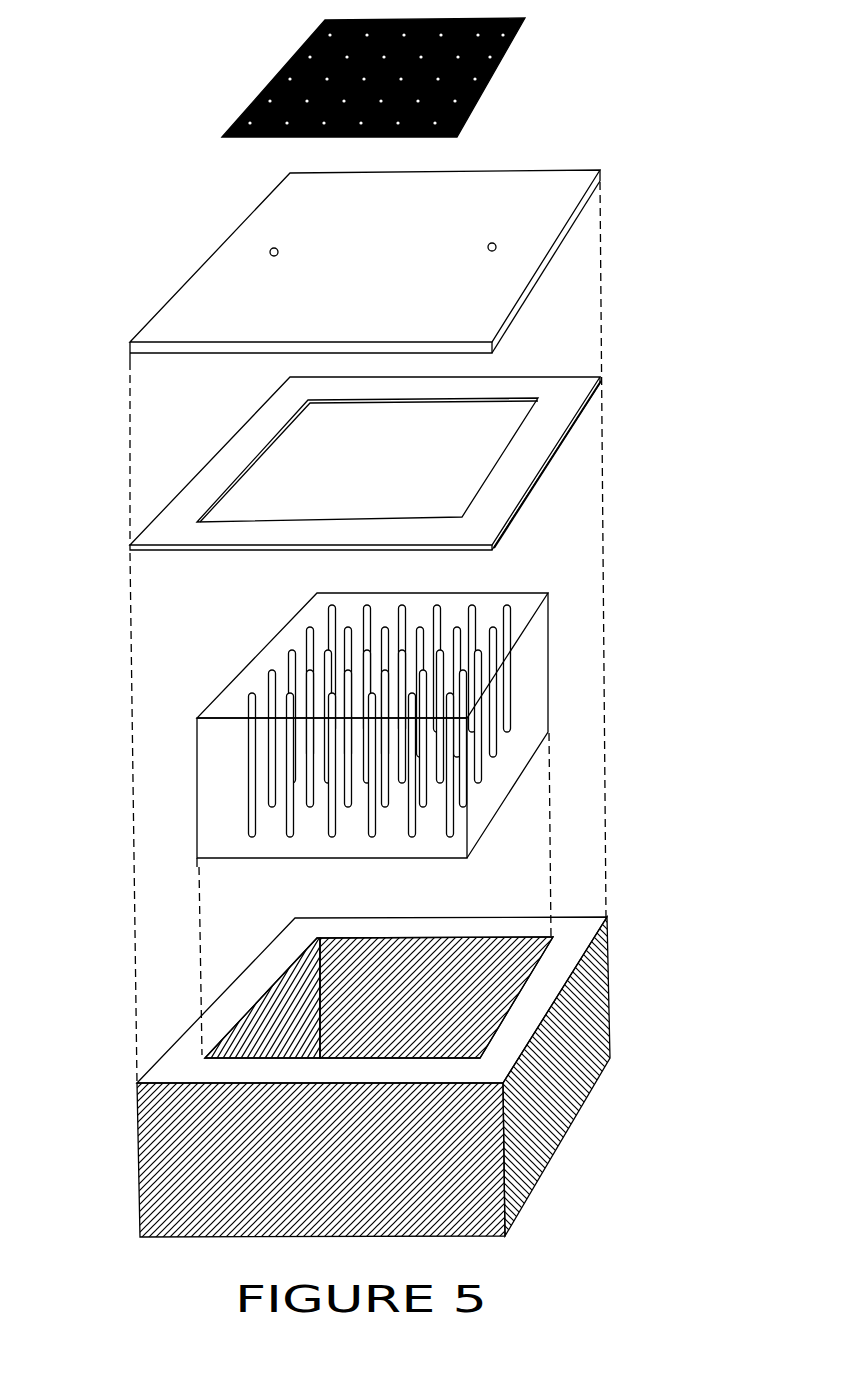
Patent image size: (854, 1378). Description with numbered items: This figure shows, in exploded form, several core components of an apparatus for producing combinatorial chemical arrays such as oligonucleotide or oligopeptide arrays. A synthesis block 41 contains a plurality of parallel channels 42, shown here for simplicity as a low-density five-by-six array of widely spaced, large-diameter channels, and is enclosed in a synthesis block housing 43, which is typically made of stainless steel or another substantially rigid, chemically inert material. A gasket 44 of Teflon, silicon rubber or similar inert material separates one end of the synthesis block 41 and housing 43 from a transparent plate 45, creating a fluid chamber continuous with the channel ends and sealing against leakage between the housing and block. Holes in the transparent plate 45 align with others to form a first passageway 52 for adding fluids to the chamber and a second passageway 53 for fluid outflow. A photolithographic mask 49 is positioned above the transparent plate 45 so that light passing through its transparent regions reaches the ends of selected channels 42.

The photolithographic mask 49 is at (490, 78).
The transparent plate 45 is at (540, 265).
The first passageway 52 is at (267, 243).
The second passageway 53 is at (503, 244).
The gasket 44 is at (550, 455).
The synthesis block 41 is at (535, 687).
The parallel channels 42 is at (250, 760).
The synthesis block housing 43 is at (560, 1025).